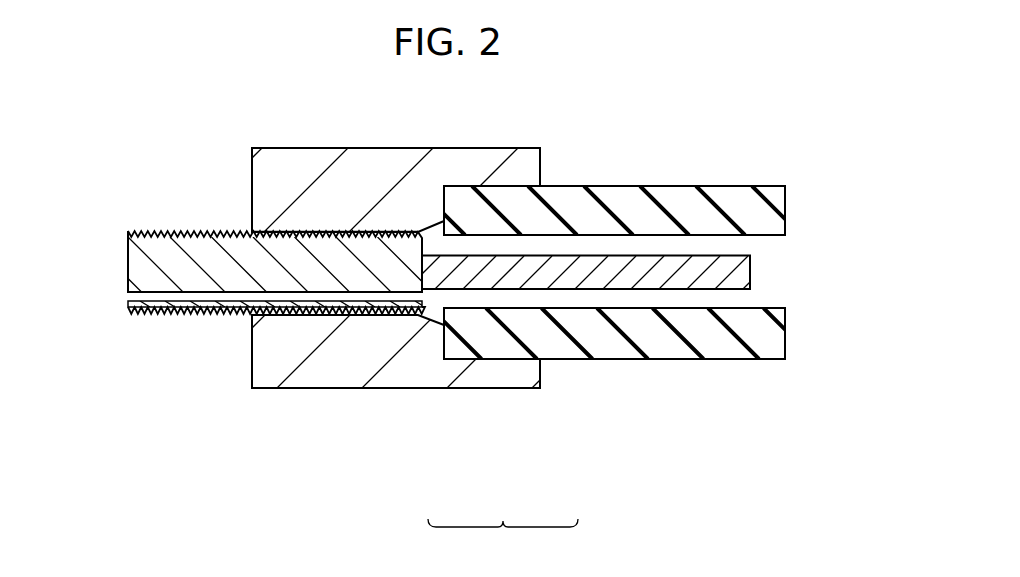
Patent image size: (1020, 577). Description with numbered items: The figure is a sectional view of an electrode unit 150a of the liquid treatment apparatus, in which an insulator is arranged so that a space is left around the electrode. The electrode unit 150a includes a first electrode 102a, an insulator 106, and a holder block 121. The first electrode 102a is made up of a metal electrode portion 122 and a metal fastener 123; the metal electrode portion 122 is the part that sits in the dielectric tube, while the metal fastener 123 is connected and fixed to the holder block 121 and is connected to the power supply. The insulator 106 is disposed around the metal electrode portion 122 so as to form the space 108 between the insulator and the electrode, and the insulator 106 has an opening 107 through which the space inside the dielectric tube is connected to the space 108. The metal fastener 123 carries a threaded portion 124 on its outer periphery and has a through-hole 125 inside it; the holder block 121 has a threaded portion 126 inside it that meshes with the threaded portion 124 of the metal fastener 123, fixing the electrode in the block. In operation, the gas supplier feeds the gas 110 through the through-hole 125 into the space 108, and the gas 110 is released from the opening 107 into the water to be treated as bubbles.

The electrode unit 150a is at (218, 103).
The threaded portion 126 is at (302, 233).
The threaded portion 124 is at (340, 231).
The space 108 is at (593, 250).
The insulator 106 is at (735, 197).
The opening 107 is at (785, 269).
The gas 110 is at (118, 298).
The through-hole 125 is at (162, 300).
The holder block 121 is at (302, 382).
The metal fastener 123 is at (359, 282).
The metal electrode portion 122 is at (613, 283).
The first electrode 102a is at (503, 541).